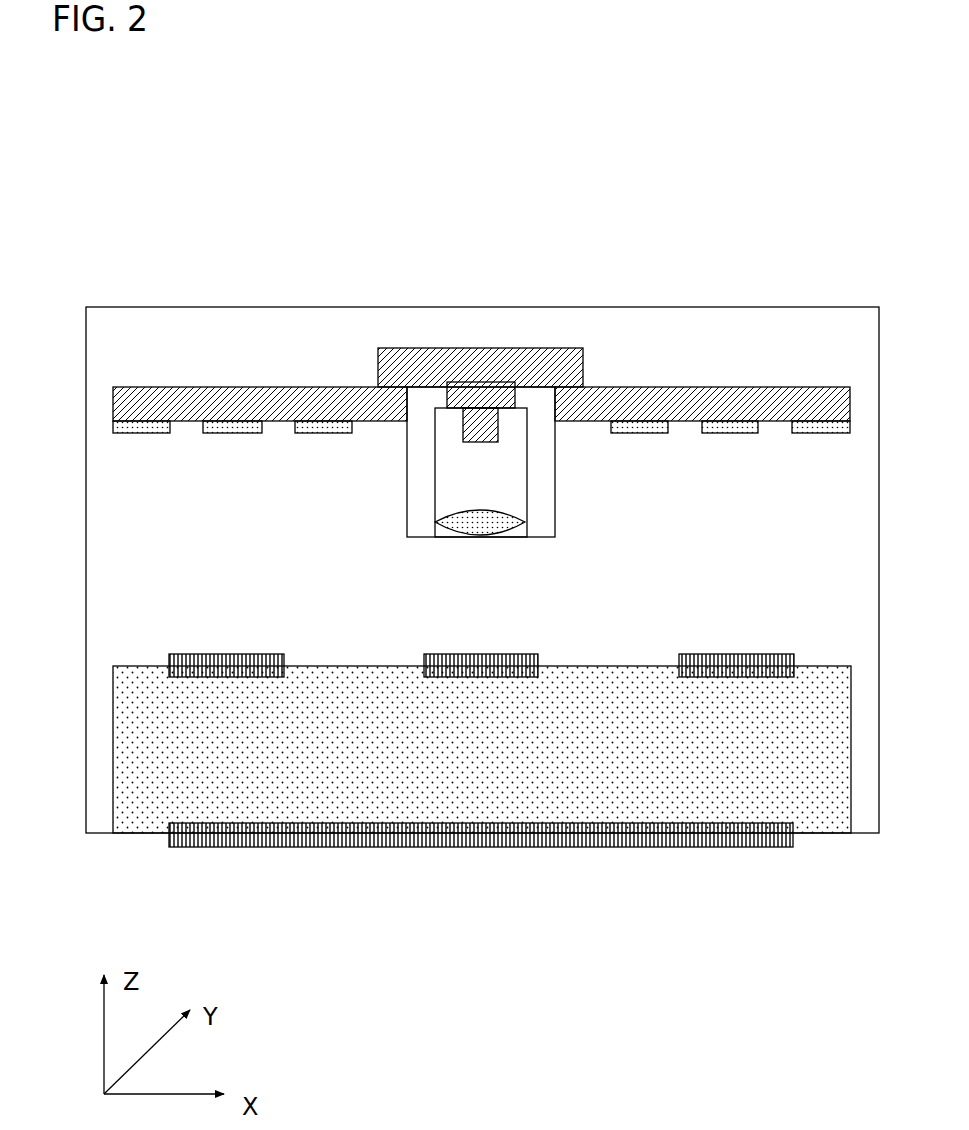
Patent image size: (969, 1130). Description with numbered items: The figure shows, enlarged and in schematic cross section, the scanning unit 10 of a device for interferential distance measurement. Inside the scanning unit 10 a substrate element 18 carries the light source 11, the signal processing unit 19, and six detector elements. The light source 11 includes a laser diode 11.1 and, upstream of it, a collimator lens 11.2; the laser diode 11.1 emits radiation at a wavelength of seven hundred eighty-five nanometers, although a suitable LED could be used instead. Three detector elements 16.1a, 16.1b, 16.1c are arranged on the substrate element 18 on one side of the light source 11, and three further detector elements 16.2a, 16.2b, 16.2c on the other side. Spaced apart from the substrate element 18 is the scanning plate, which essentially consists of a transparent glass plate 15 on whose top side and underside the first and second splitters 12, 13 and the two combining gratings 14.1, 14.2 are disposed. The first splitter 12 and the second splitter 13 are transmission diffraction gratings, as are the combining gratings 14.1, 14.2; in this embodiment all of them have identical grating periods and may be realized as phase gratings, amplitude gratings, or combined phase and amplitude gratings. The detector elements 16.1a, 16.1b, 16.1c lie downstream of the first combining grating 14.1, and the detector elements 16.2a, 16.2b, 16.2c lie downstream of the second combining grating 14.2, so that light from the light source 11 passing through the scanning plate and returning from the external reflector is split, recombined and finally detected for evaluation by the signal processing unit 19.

The scanning unit 10 is at (497, 307).
The light source 11 is at (402, 520).
The laser diode 11.1 is at (490, 428).
The collimator lens 11.2 is at (495, 528).
The first splitter 12 is at (460, 667).
The second splitter 13 is at (525, 850).
The first combining grating 14.1 is at (214, 666).
The second combining grating 14.2 is at (715, 666).
The transparent glass plate 15 is at (360, 800).
The detector element 16.1a is at (140, 435).
The detector element 16.1b is at (232, 435).
The detector element 16.1c is at (325, 435).
The detector element 16.2a is at (642, 435).
The detector element 16.2b is at (725, 435).
The detector element 16.2c is at (830, 435).
The substrate element 18 is at (795, 410).
The signal processing unit 19 is at (548, 372).